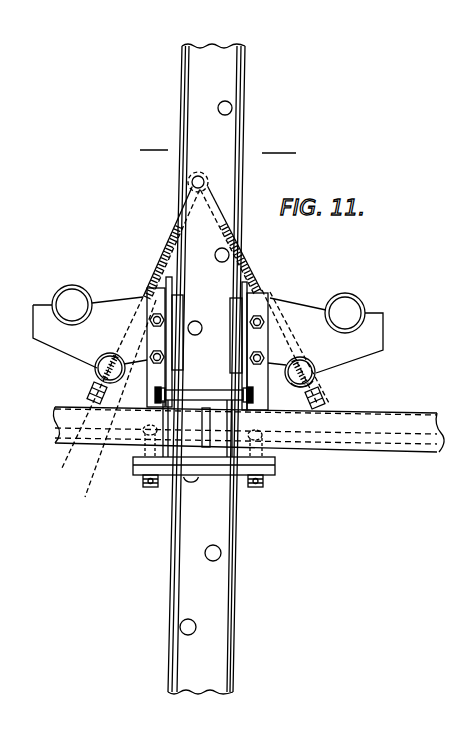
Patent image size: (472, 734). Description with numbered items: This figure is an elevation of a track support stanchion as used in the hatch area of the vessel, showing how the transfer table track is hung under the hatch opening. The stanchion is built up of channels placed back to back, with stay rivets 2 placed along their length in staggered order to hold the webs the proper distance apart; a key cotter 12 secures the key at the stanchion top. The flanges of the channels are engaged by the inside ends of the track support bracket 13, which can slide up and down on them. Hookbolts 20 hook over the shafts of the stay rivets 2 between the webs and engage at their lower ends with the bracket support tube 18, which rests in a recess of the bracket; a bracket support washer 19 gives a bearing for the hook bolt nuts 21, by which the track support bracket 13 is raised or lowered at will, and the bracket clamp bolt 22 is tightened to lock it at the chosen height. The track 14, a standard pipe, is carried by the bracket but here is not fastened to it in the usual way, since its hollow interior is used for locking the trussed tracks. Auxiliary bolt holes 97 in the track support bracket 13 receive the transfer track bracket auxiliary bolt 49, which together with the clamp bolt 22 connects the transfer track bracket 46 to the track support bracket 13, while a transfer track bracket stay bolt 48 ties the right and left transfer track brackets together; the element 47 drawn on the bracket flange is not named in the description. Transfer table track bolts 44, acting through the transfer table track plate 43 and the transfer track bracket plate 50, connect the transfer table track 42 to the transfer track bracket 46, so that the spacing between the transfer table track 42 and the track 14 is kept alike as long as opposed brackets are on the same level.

The stay rivets 2 is at (233, 107).
The key cotter 12 is at (215, 161).
The track support bracket 13 is at (47, 305).
The track 14 is at (86, 290).
The bracket support tube 18 is at (95, 368).
The bracket support washer 19 is at (316, 384).
The hookbolts 20 is at (168, 240).
The hook bolt nuts 21 is at (90, 384).
The bracket clamp bolt 22 is at (152, 316).
The transfer table track 42 is at (255, 412).
The transfer table track plate 43 is at (266, 393).
The transfer table track bolts 44 is at (150, 487).
The transfer track bracket 46 is at (90, 393).
The plate 47 is at (165, 280).
The transfer track bracket stay bolt 48 is at (276, 390).
The transfer track bracket auxiliary bolt 49 is at (196, 402).
The transfer track bracket plate 50 is at (274, 480).
The auxiliary bolt holes 97 is at (137, 408).